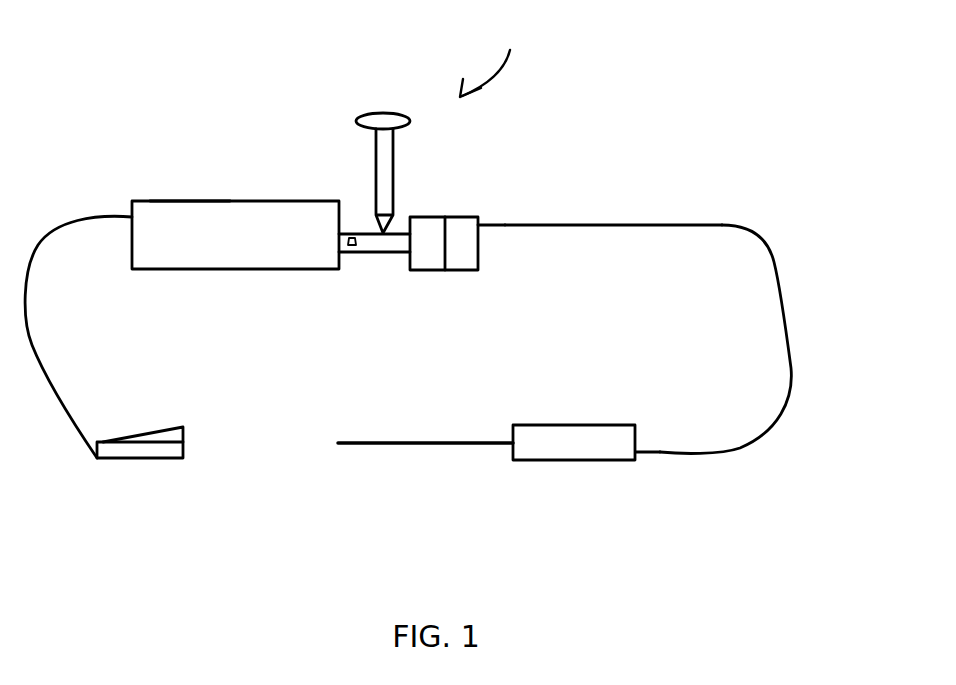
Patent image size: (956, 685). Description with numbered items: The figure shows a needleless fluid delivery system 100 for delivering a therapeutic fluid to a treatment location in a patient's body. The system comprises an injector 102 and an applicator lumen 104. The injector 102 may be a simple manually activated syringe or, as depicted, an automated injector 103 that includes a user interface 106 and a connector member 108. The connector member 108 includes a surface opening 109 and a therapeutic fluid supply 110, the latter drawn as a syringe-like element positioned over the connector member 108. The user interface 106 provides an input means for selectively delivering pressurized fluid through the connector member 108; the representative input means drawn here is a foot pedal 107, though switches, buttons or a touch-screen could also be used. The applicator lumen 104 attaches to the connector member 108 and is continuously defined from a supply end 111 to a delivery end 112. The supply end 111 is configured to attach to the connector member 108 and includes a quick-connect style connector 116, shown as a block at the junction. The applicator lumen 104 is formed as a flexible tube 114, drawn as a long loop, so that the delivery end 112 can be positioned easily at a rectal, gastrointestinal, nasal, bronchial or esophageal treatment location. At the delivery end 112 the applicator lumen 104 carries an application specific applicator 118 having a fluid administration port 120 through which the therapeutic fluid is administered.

The needleless fluid delivery system 100 is at (509, 55).
The injector 102 is at (223, 253).
The automated injector 103 is at (178, 201).
The applicator lumen 104 is at (672, 222).
The user interface 106 is at (140, 463).
The foot pedal 107 is at (157, 430).
The connector member 108 is at (370, 253).
The surface opening 109 is at (353, 235).
The therapeutic fluid supply 110 is at (376, 167).
The supply end 111 is at (481, 222).
The delivery end 112 is at (633, 453).
The flexible tube 114 is at (782, 303).
The quick-connect style connector 116 is at (465, 217).
The application specific applicator 118 is at (562, 460).
The fluid administration port 120 is at (338, 443).